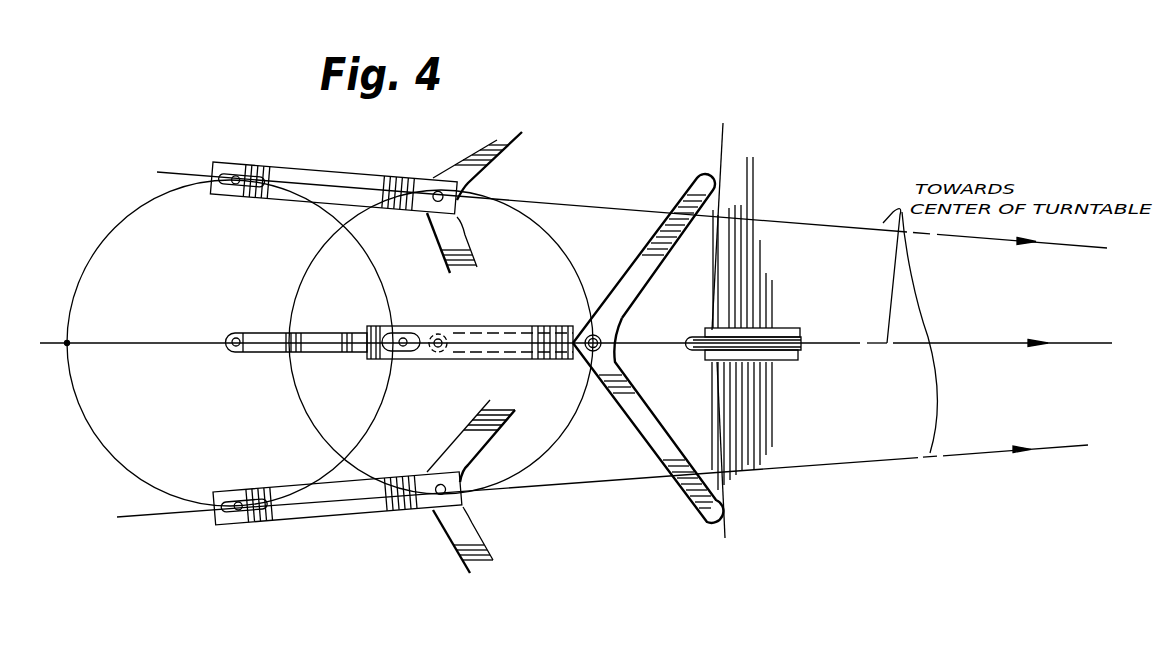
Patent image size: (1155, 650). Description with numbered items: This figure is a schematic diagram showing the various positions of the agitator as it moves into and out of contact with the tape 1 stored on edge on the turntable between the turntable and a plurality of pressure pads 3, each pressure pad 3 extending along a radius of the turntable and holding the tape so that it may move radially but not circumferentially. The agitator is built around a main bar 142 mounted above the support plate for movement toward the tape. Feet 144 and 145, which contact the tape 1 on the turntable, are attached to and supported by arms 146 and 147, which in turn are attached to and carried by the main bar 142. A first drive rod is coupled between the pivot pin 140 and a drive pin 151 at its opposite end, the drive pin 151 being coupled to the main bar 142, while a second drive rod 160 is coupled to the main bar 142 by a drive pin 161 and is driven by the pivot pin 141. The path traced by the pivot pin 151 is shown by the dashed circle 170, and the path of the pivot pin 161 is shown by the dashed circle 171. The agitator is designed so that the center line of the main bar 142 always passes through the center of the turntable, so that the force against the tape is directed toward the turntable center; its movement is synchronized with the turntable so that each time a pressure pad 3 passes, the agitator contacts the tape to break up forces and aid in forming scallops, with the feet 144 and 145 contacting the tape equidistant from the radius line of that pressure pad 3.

The tape 1 is at (738, 533).
The pressure pad 3 is at (693, 357).
The pivot pin 140 is at (453, 323).
The pivot pin 141 is at (238, 336).
The main bar 142 is at (326, 178).
The foot 144 is at (713, 190).
The foot 145 is at (722, 507).
The arm 146 is at (657, 260).
The arm 147 is at (650, 418).
The drive pin 151 is at (594, 356).
The second drive rod 160 is at (263, 352).
The drive pin 161 is at (245, 171).
The dashed circle 170 is at (560, 253).
The dashed circle 171 is at (122, 218).